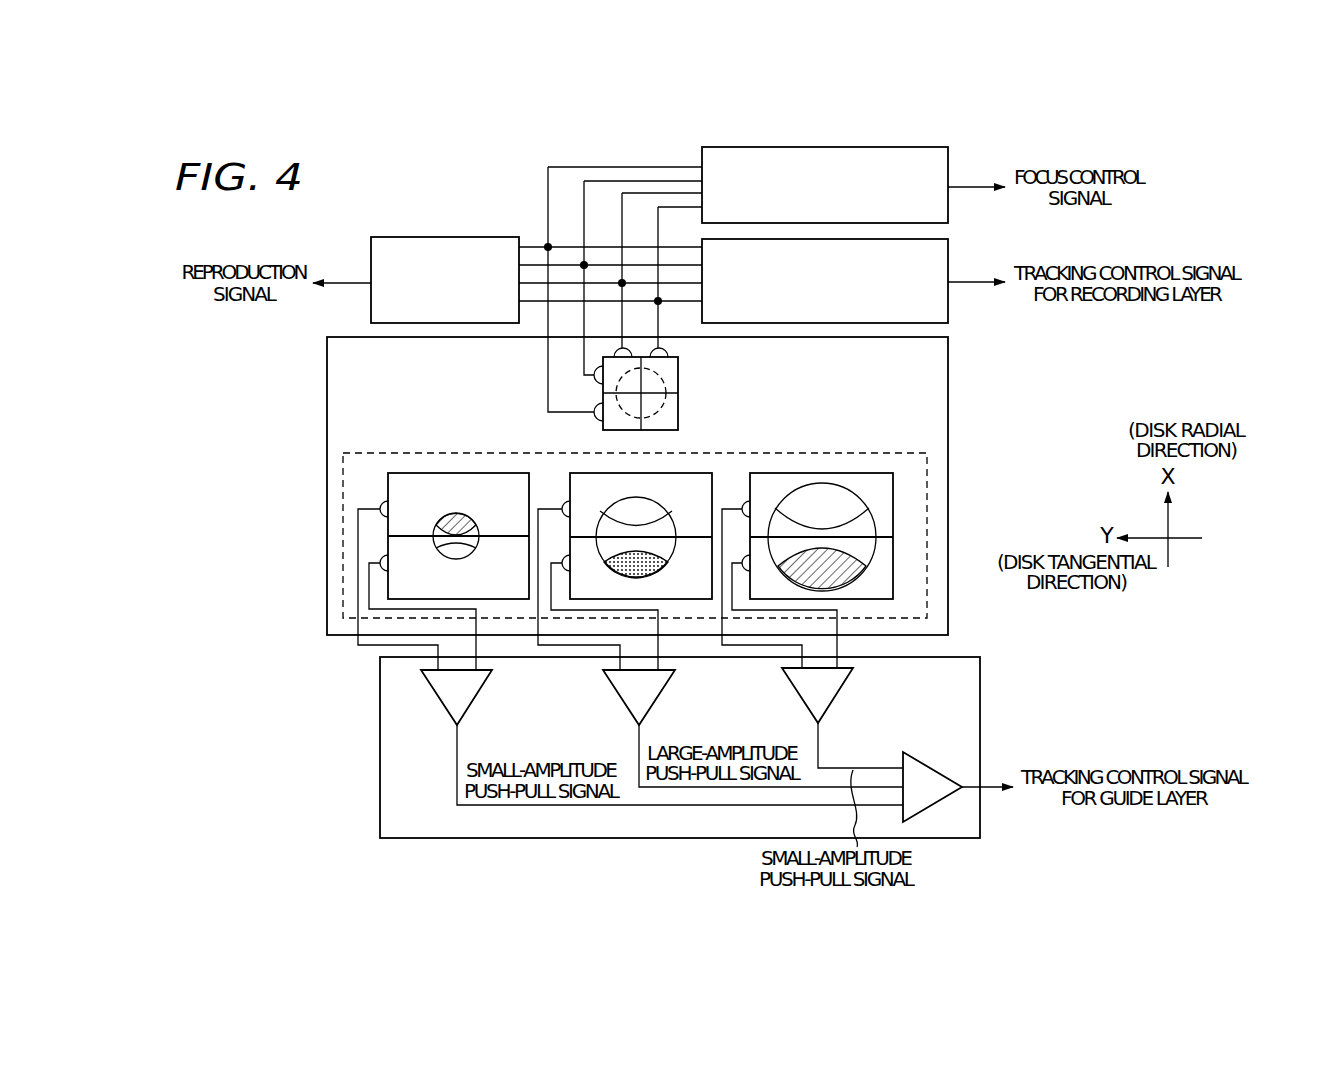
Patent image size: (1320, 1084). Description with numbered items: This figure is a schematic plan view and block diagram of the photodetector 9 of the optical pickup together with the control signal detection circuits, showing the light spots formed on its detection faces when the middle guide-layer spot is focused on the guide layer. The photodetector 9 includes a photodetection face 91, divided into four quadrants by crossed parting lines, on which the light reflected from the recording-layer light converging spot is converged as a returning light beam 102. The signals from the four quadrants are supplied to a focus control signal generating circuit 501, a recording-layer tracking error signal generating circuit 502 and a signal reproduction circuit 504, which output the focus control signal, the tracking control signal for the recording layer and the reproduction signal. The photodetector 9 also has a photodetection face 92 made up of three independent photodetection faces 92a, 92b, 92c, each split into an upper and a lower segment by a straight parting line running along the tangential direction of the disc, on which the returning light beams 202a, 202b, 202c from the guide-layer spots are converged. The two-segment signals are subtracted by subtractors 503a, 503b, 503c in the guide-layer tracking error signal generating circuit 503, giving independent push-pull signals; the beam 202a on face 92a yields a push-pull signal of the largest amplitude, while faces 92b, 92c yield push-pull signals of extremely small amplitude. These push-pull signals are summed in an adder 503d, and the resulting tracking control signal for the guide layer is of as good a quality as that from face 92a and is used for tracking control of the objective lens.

The photodetector 9 is at (948, 378).
The photodetection face 91 is at (680, 400).
The photodetection face 92 is at (829, 453).
The photodetection face 92a is at (708, 473).
The photodetection face 92b is at (398, 473).
The photodetection face 92c is at (780, 473).
The returning light beam 102 is at (657, 375).
The returning light beam 202a is at (620, 508).
The returning light beam 202b is at (850, 495).
The returning light beam 202c is at (457, 515).
The focus control signal generating circuit 501 is at (952, 163).
The recording-layer tracking error signal generating circuit 502 is at (952, 260).
The guide-layer tracking error signal generating circuit 503 is at (623, 838).
The subtractor 503a is at (655, 700).
The subtractor 503b is at (835, 700).
The subtractor 503c is at (472, 700).
The adder 503d is at (945, 773).
The signal reproduction circuit 504 is at (478, 237).